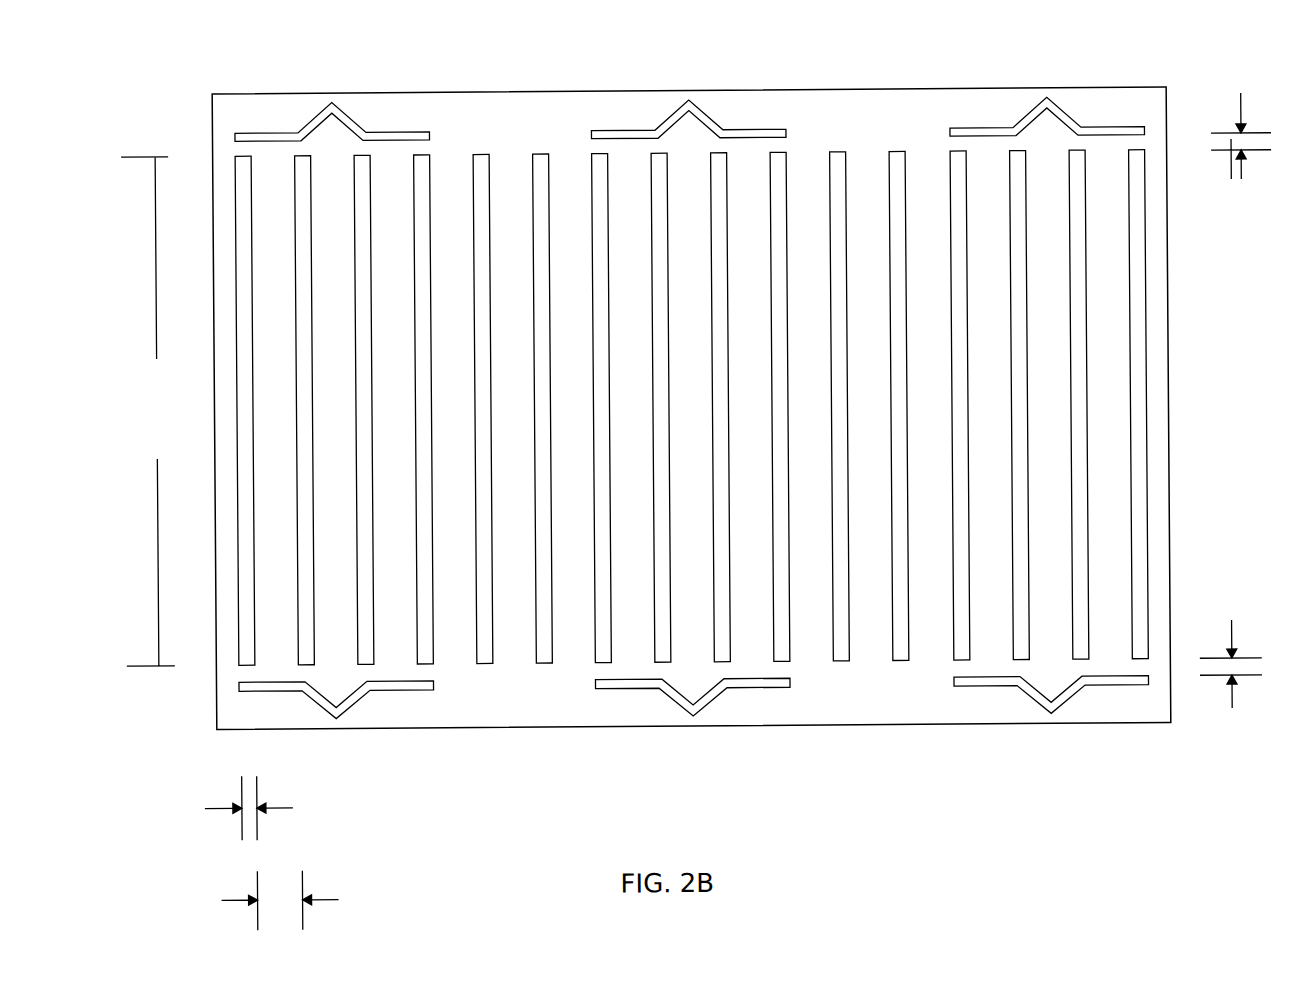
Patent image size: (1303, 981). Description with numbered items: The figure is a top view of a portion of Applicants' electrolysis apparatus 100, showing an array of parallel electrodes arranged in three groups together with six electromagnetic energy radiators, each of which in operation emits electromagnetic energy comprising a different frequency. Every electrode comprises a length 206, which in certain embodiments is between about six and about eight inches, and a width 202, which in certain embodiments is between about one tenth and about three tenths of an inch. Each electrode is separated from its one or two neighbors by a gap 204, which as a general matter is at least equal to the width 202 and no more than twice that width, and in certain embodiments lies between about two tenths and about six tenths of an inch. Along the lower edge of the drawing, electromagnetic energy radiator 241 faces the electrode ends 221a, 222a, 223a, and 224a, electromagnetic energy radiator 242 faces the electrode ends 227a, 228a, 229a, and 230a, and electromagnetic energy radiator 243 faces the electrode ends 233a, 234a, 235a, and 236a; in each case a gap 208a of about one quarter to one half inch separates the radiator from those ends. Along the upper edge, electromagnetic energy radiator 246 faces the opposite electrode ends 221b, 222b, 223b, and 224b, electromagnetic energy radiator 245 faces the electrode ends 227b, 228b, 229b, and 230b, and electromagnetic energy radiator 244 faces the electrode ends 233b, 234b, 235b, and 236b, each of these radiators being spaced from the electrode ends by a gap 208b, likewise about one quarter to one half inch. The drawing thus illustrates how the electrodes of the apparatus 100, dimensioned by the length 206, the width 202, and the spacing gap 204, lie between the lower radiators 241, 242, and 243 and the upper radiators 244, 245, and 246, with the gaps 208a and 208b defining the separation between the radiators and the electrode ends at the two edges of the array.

The electrolysis apparatus 100 is at (725, 771).
The width 202 is at (243, 793).
The gap 204 is at (282, 893).
The length 206 is at (150, 411).
The gap 208a is at (1223, 672).
The gap 208b is at (1240, 157).
The electrode end 221a is at (266, 410).
The electrode end 221b is at (240, 155).
The electrode end 222a is at (326, 409).
The electrode end 222b is at (300, 155).
The electrode end 223a is at (385, 409).
The electrode end 223b is at (359, 155).
The electrode end 224a is at (445, 409).
The electrode end 224b is at (418, 155).
The electrode end 227a is at (623, 407).
The electrode end 227b is at (596, 155).
The electrode end 228a is at (682, 407).
The electrode end 228b is at (656, 155).
The electrode end 229a is at (742, 406).
The electrode end 229b is at (716, 155).
The electrode end 230a is at (801, 406).
The electrode end 230b is at (775, 155).
The electrode end 233a is at (981, 405).
The electrode end 233b is at (955, 155).
The electrode end 234a is at (1041, 404).
The electrode end 234b is at (1014, 155).
The electrode end 235a is at (1100, 404).
The electrode end 235b is at (1074, 155).
The electrode end 236a is at (1160, 403).
The electrode end 236b is at (1134, 155).
The electromagnetic energy radiator 241 is at (408, 688).
The electromagnetic energy radiator 242 is at (767, 688).
The electromagnetic energy radiator 243 is at (1117, 688).
The electromagnetic energy radiator 244 is at (965, 138).
The electromagnetic energy radiator 245 is at (623, 138).
The electromagnetic energy radiator 246 is at (383, 138).